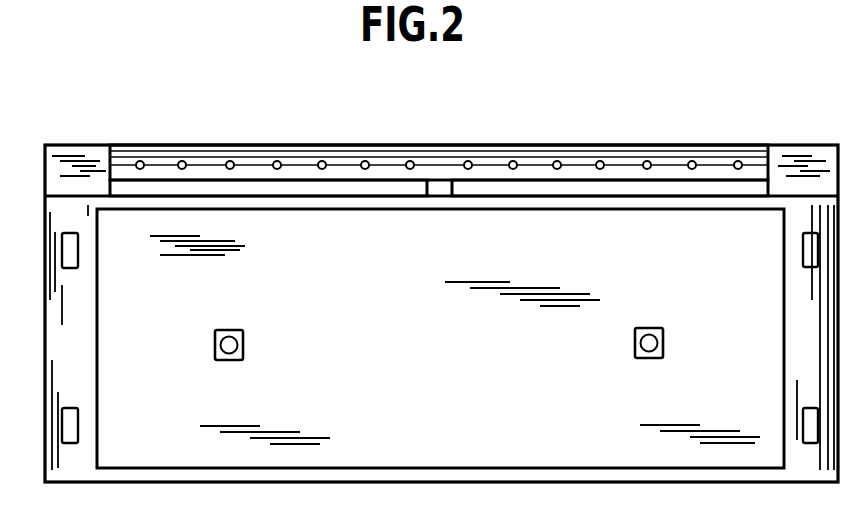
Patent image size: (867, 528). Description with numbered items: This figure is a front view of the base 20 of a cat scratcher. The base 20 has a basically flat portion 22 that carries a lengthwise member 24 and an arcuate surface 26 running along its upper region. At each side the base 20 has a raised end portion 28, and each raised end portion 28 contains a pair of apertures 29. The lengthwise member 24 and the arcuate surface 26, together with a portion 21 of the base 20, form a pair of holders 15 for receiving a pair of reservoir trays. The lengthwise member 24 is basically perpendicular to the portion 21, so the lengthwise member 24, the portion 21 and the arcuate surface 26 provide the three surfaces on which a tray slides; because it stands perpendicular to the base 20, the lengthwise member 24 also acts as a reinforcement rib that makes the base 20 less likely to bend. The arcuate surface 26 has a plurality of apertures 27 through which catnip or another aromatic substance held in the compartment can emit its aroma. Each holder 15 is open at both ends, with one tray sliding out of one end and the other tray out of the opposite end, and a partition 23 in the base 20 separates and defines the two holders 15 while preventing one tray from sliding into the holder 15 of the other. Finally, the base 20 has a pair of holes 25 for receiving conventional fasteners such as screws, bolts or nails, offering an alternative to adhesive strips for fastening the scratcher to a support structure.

The holder 15 is at (302, 212).
The base 20 is at (423, 354).
The portion of the base 21 is at (706, 194).
The flat portion 22 is at (528, 470).
The partition 23 is at (440, 180).
The lengthwise member 24 is at (163, 192).
The holes 25 is at (233, 360).
The arcuate surface 26 is at (637, 152).
The apertures 27 is at (231, 152).
The raised end portions 28 is at (84, 340).
The apertures 29 is at (78, 254).